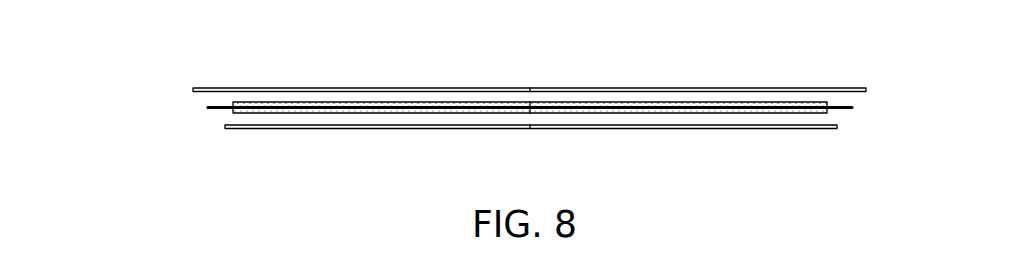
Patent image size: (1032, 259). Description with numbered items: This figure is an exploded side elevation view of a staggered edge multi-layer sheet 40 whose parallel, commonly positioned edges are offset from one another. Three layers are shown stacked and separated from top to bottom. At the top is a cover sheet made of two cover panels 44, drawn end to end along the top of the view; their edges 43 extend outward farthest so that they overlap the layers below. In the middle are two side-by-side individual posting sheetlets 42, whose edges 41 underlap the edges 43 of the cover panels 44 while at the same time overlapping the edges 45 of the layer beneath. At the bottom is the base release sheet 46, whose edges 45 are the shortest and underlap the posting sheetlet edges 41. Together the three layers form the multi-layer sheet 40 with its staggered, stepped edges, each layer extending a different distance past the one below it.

The multi-layer sheet 40 is at (146, 156).
The edges of the posting sheetlets 41 is at (212, 108).
The posting sheetlets 42 is at (418, 113).
The edges of the cover panels 43 is at (195, 90).
The cover panels 44 is at (467, 87).
The edges of the base release sheet 45 is at (228, 125).
The base release sheet 46 is at (710, 128).